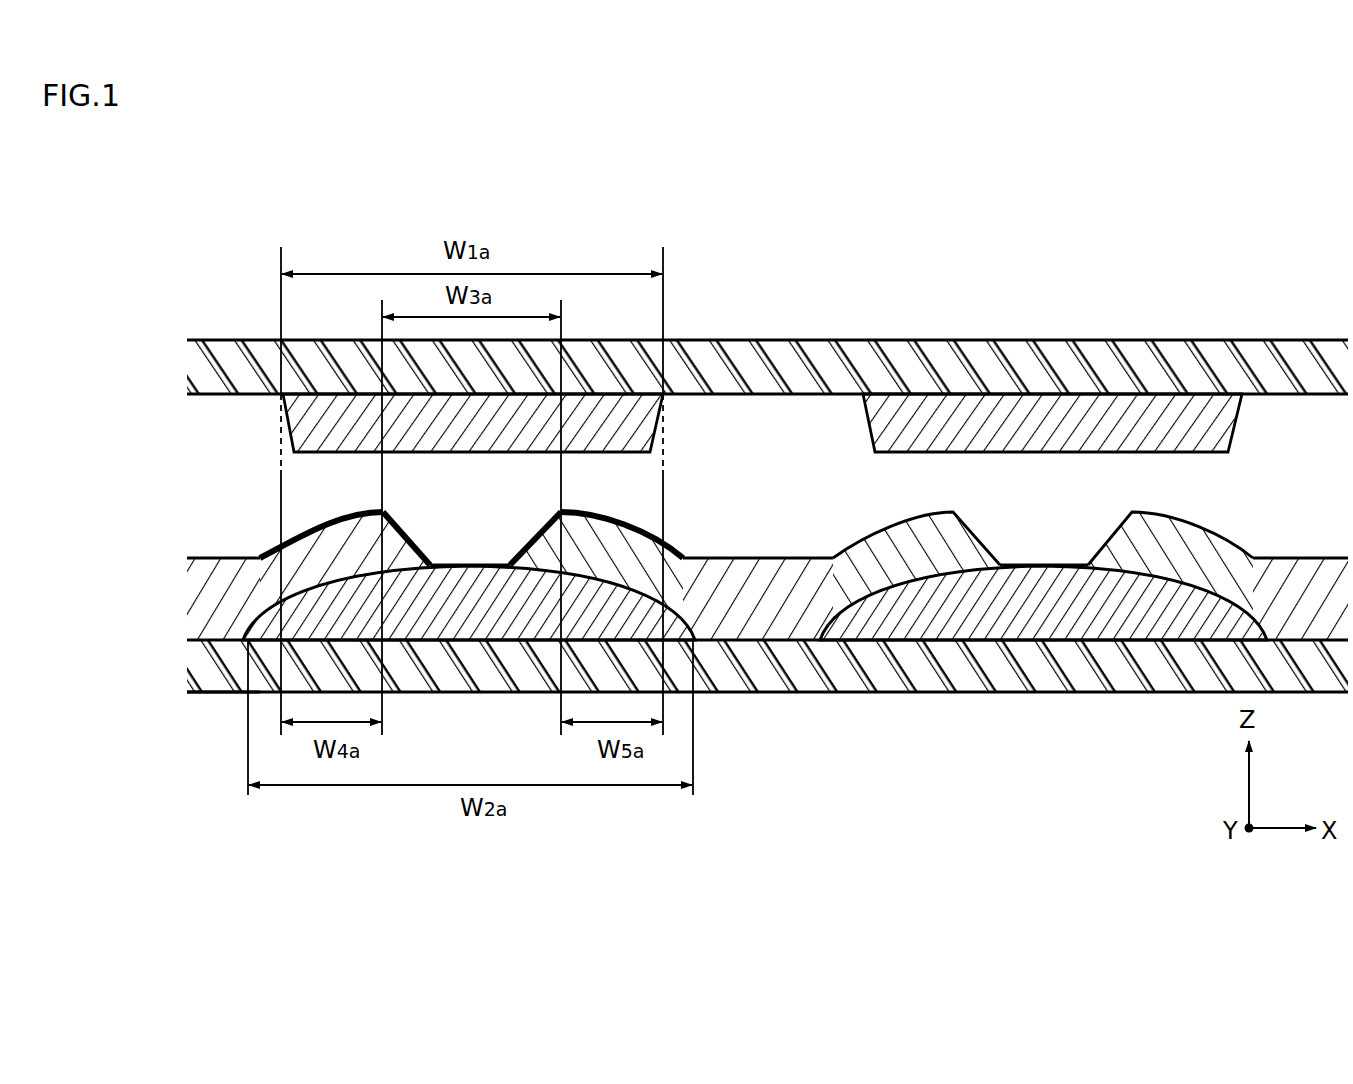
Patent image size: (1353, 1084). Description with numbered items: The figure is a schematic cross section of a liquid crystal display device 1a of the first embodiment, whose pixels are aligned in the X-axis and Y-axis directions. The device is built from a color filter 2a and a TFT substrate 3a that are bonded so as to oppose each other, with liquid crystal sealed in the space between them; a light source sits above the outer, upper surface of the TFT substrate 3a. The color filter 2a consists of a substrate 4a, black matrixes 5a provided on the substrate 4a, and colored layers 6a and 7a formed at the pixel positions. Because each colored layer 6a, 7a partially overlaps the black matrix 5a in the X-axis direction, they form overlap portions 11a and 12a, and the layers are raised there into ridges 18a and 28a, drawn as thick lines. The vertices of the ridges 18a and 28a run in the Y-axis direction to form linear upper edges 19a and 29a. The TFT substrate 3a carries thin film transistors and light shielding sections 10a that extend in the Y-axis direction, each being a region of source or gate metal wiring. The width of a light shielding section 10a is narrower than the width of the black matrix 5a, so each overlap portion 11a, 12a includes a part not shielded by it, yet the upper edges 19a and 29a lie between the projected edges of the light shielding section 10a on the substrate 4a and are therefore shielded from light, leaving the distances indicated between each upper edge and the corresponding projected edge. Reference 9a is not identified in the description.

The liquid crystal display device 1a is at (231, 270).
The color filter 2a is at (195, 548).
The TFT substrate 3a is at (196, 340).
The substrate 4a is at (720, 692).
The black matrix 5a is at (468, 645).
The colored layer 6a is at (208, 694).
The colored layer 7a is at (767, 558).
The upper glass substrate 9a is at (713, 340).
The light shielding section 10a is at (657, 426).
The overlap portion 11a is at (428, 498).
The overlap portion 12a is at (678, 498).
The ridge 18a is at (296, 522).
The upper edge 19a is at (388, 513).
The ridge 28a is at (647, 522).
The upper edge 29a is at (557, 512).